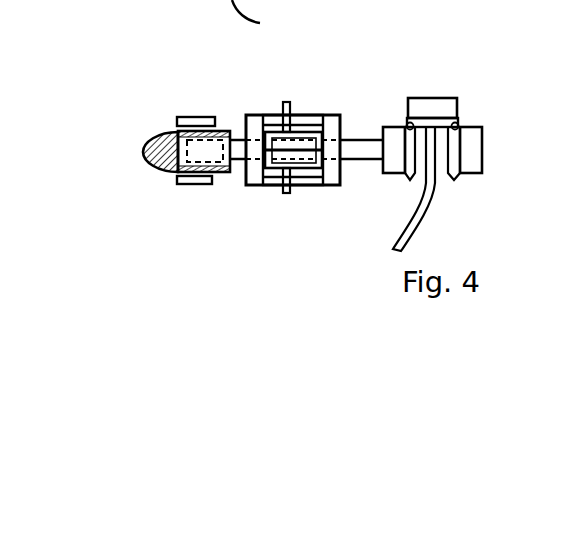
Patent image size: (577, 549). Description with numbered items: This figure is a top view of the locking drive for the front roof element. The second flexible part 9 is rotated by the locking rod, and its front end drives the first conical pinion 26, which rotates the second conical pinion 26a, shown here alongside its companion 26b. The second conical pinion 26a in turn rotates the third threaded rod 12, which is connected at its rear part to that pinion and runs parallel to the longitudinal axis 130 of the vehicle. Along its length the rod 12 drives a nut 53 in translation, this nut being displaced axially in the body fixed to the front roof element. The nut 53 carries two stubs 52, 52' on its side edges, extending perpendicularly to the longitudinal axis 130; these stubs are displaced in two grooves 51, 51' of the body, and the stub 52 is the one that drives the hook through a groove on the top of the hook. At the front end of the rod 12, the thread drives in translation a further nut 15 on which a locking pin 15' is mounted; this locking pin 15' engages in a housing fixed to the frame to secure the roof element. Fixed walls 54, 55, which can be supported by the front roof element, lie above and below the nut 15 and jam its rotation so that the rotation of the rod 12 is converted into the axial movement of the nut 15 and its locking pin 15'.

The longitudinal axis of the vehicle 130 is at (266, 18).
The nut 15 is at (204, 215).
The locking pin 15' is at (135, 186).
The fixed wall 54 is at (187, 117).
The fixed wall 55 is at (180, 184).
The third threaded rod 12 is at (236, 150).
The nut 53 is at (258, 128).
The groove 51' is at (309, 99).
The groove 51 is at (295, 217).
The stub 52' is at (299, 85).
The stub 52 is at (275, 232).
The first conical pinion 26 is at (433, 107).
The second conical pinion 26a is at (386, 127).
The right drive leg 26b is at (472, 133).
The second flexible part 9 is at (432, 214).